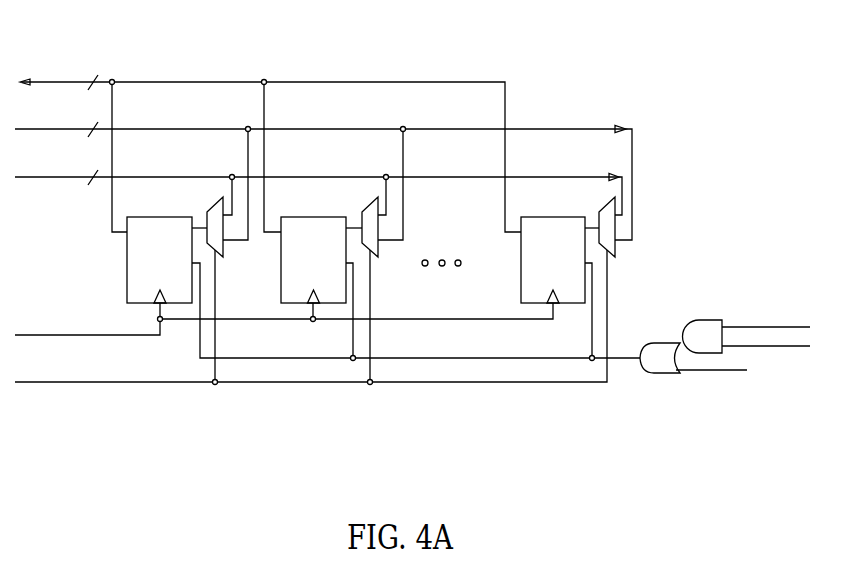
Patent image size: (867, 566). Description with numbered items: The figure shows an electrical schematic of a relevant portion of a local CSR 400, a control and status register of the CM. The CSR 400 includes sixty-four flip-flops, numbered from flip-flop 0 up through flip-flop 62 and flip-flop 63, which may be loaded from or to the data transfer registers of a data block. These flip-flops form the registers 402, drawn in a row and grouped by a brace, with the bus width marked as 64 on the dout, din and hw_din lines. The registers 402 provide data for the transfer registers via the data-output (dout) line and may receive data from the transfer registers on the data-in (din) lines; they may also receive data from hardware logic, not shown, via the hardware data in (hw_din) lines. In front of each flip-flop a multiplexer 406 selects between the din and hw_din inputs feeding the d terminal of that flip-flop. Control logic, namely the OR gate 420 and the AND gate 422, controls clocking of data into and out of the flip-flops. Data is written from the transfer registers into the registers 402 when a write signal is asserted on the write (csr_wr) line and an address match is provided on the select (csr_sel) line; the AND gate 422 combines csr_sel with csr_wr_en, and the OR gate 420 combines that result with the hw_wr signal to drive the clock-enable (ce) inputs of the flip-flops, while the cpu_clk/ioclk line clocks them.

The local CSR 400 is at (556, 49).
The registers 402 is at (590, 398).
The multiplexer 406 is at (228, 248).
The OR gate 420 is at (660, 378).
The AND gate 422 is at (713, 316).
The 64-bit bus width 64 is at (323, 146).
The flip-flop bit 63 is at (159, 246).
The flip-flop bit 62 is at (313, 246).
The flip-flop bit 0 is at (553, 246).